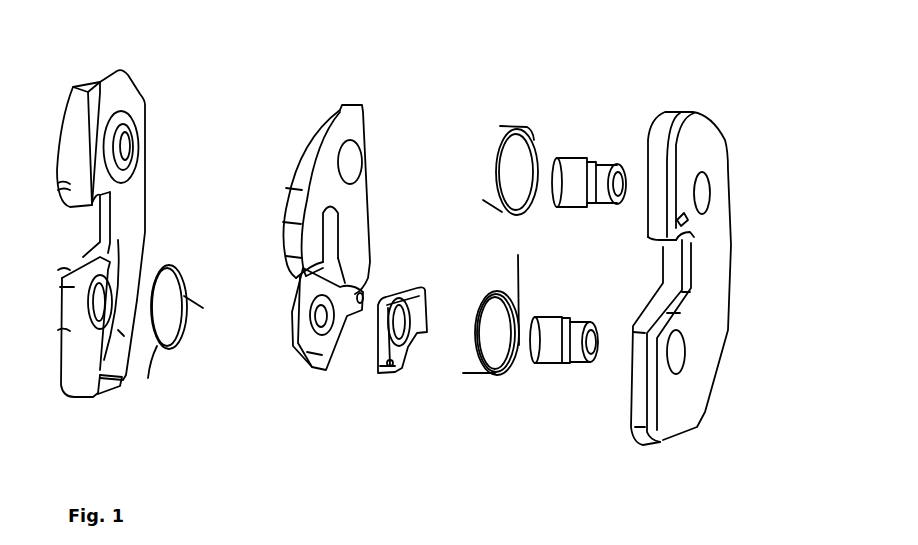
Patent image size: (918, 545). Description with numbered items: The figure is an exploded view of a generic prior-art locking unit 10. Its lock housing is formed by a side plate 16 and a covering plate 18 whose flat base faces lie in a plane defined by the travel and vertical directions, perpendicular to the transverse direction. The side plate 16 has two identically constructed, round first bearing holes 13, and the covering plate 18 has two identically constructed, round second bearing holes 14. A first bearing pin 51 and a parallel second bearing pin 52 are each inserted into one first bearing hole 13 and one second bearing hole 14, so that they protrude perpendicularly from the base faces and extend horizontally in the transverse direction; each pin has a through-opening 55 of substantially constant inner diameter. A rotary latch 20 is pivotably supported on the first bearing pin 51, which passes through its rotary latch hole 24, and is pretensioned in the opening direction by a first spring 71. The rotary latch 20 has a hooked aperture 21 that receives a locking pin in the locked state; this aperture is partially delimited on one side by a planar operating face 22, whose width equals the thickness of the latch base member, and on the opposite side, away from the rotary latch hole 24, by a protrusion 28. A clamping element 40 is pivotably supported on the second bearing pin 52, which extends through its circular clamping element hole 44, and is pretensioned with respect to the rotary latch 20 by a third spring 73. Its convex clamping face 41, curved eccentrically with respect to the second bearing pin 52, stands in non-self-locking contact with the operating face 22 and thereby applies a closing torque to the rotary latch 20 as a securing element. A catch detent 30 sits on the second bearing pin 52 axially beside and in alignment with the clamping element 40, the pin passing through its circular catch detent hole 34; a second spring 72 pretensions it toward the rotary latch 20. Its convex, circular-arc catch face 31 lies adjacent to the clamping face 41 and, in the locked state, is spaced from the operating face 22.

The locking unit 10 is at (506, 80).
The first bearing holes 13 is at (125, 145).
The second bearing holes 14 is at (702, 193).
The side plate 16 is at (120, 92).
The covering plate 18 is at (697, 140).
The rotary latch 20 is at (320, 122).
The hooked aperture 21 is at (330, 235).
The operating face 22 is at (313, 260).
The rotary latch hole 24 is at (352, 165).
The protrusion 28 is at (294, 275).
The catch detent 30 is at (320, 350).
The catch face 31 is at (342, 278).
The catch detent hole 34 is at (326, 322).
The clamping element 40 is at (398, 354).
The clamping face 41 is at (428, 313).
The clamping element hole 44 is at (399, 322).
The first bearing pin 51 is at (580, 177).
The second bearing pin 52 is at (553, 332).
The through-opening 55 is at (614, 187).
The first spring 71 is at (500, 158).
The second spring 72 is at (173, 345).
The third spring 73 is at (513, 370).